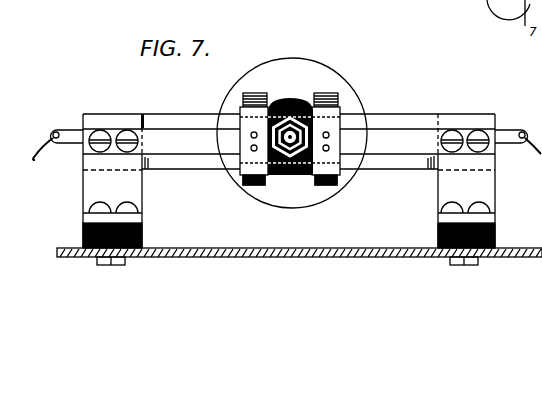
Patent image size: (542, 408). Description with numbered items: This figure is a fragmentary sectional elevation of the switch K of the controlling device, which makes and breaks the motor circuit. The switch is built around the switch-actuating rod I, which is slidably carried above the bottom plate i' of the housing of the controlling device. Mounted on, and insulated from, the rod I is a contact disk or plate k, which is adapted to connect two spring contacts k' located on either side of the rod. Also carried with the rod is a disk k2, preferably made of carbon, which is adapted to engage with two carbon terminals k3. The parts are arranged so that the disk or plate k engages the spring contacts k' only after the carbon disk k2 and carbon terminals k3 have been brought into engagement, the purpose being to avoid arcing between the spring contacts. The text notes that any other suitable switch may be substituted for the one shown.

The switch K is at (287, 167).
The contact disk or plate k is at (292, 133).
The spring contacts k' is at (289, 106).
The disk k2 is at (312, 98).
The carbon terminals k3 is at (252, 186).
The switch-actuating rod I is at (290, 142).
The bottom plate i' is at (299, 247).